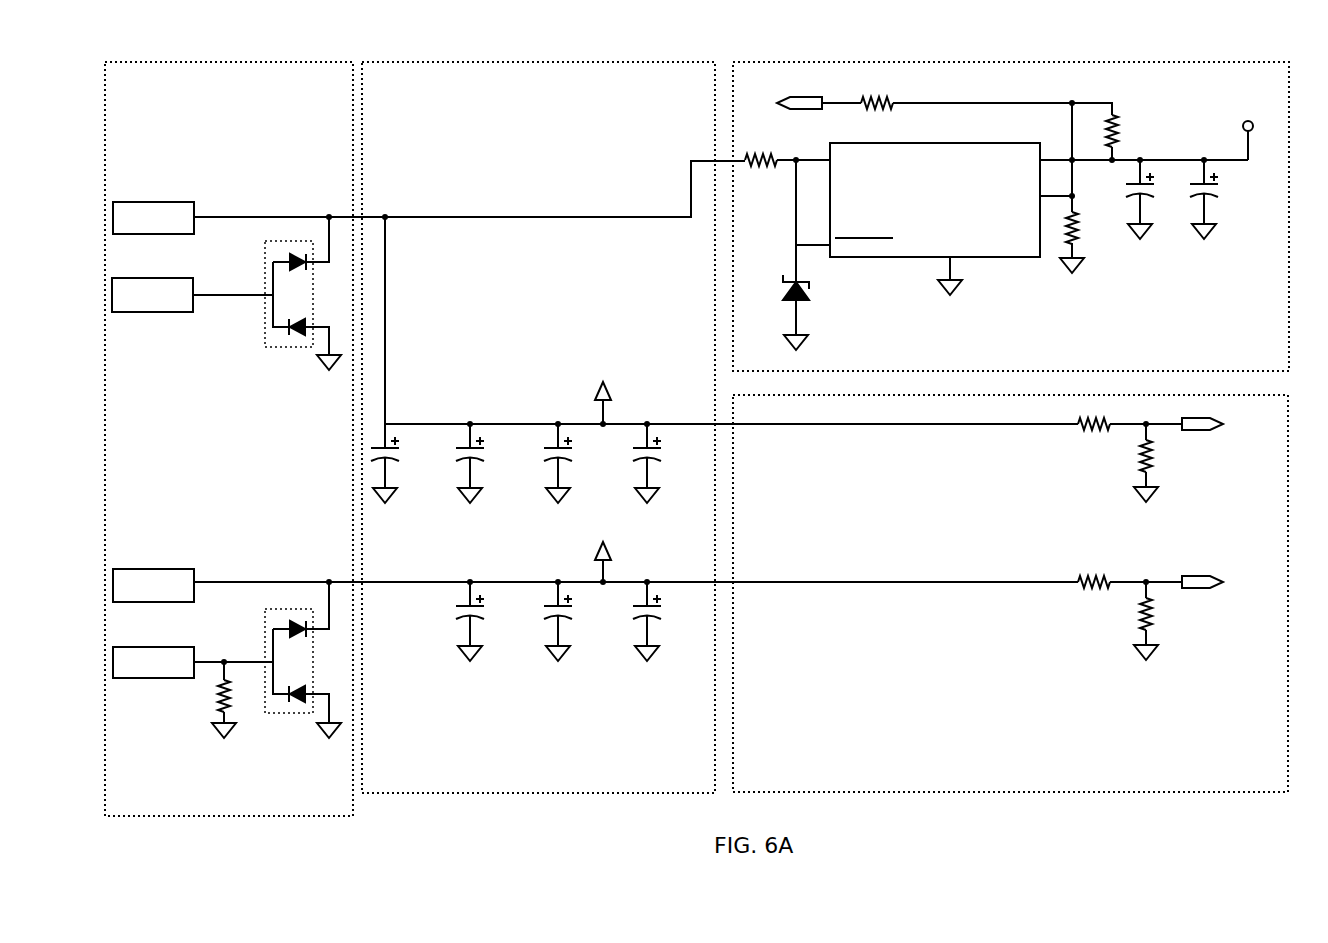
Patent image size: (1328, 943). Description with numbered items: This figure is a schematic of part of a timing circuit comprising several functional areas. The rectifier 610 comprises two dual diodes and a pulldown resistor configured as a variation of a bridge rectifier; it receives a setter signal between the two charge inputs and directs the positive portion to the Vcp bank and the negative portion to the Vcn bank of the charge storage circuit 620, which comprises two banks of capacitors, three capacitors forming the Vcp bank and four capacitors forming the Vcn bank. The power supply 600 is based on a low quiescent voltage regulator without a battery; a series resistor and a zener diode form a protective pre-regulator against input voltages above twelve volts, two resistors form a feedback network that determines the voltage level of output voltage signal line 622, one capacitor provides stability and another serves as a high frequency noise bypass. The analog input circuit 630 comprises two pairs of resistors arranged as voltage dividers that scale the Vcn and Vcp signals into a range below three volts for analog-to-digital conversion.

The power supply 600 is at (1017, 62).
The rectifier 610 is at (233, 62).
The charge storage circuit 620 is at (545, 62).
The output voltage signal line 622 is at (1180, 160).
The analog input circuit 630 is at (1010, 792).